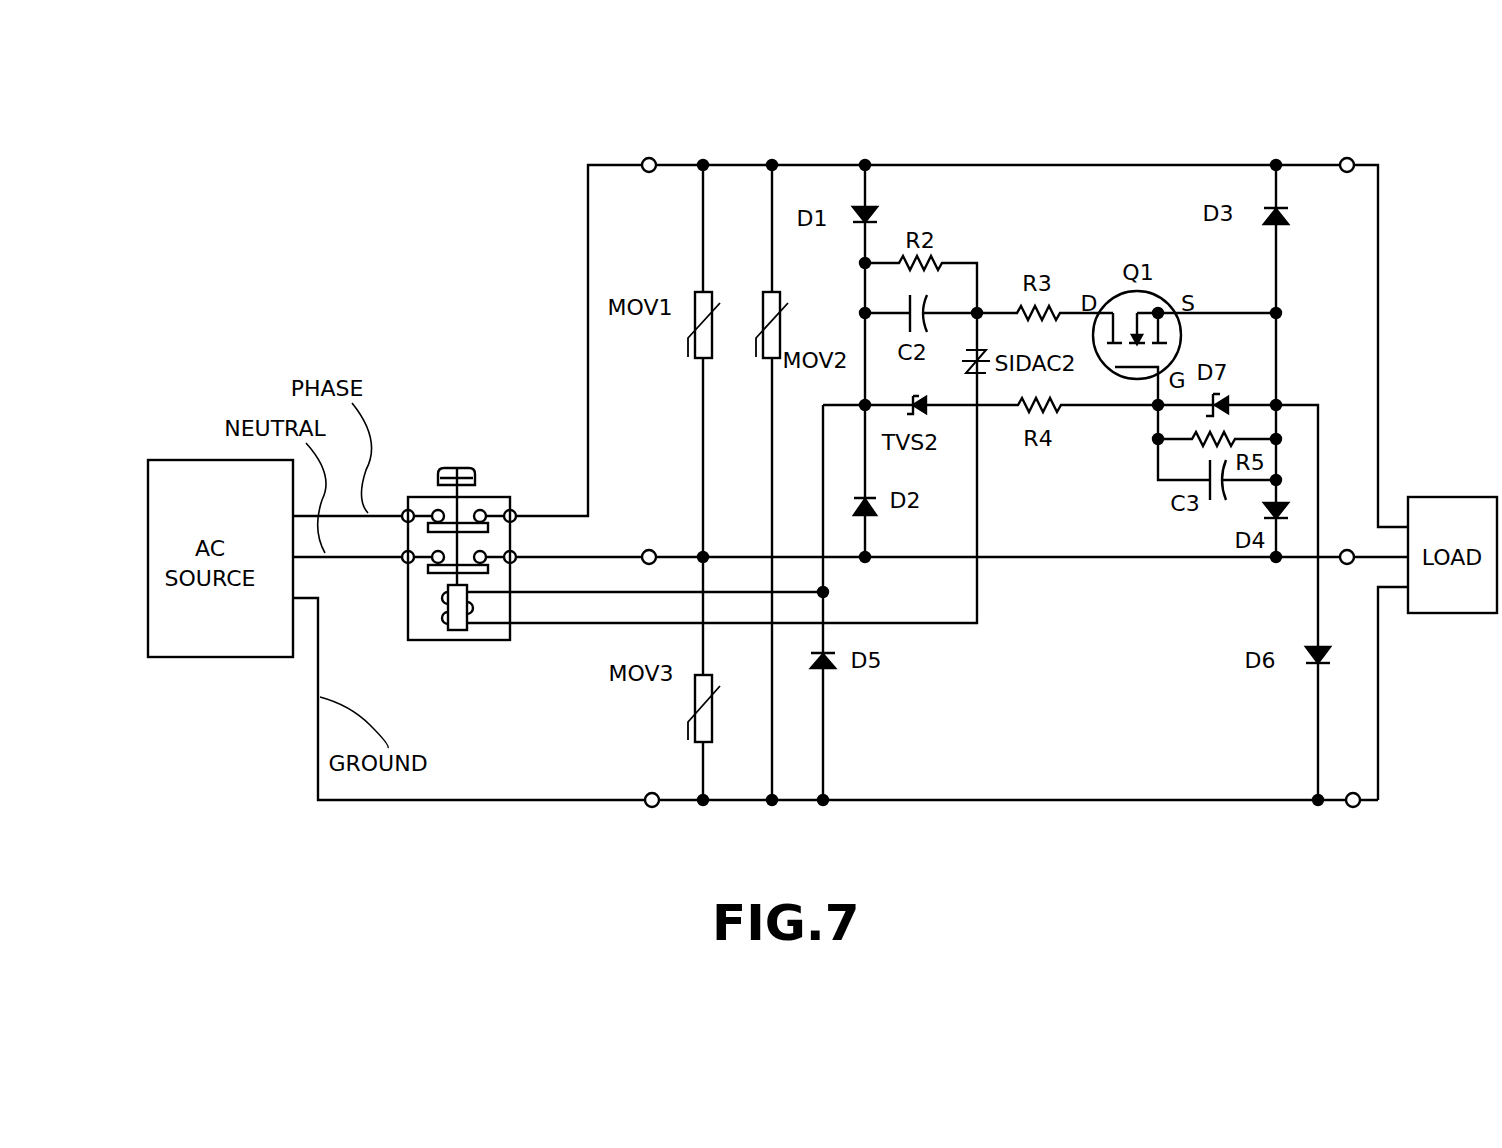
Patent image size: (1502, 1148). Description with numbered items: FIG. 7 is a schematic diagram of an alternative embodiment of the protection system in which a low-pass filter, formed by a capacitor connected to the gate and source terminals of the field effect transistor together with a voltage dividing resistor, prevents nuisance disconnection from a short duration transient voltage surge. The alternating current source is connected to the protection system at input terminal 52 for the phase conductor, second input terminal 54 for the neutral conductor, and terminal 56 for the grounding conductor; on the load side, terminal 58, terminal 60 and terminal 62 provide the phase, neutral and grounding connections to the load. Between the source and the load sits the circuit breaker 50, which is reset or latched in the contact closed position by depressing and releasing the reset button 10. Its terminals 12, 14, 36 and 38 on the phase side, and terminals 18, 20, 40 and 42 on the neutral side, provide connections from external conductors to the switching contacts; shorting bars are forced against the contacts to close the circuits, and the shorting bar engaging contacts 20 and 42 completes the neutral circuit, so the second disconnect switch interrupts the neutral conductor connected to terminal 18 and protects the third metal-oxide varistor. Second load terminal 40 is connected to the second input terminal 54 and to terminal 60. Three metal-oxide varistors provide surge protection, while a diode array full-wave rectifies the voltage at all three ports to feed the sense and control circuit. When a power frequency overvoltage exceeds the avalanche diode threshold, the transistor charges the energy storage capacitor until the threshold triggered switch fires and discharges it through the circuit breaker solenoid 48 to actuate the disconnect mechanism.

The reset button 10 is at (457, 466).
The circuit breaker terminal 12 is at (407, 509).
The switching contact 14 is at (437, 509).
The circuit breaker terminal 18 is at (403, 558).
The switching contact 20 is at (433, 560).
The circuit breaker terminal 36 is at (514, 511).
The switching contact 38 is at (483, 509).
The second load terminal 40 is at (516, 560).
The switching contact 42 is at (485, 554).
The circuit breaker solenoid 48 is at (457, 640).
The circuit breaker 50 is at (580, 544).
The input terminal 52 is at (645, 158).
The second input terminal 54 is at (648, 550).
The ground input terminal 56 is at (652, 793).
The output terminal 58 is at (1345, 158).
The neutral output terminal 60 is at (1348, 564).
The ground output terminal 62 is at (1353, 807).